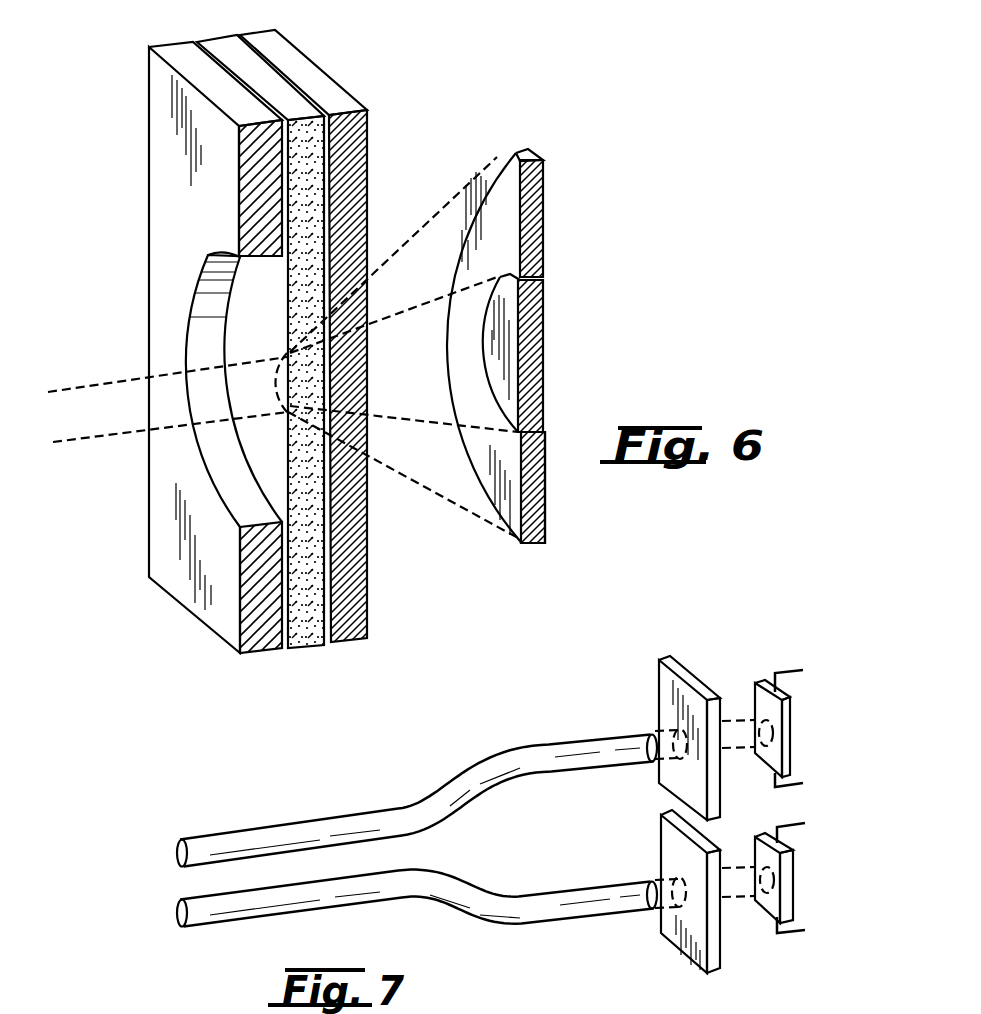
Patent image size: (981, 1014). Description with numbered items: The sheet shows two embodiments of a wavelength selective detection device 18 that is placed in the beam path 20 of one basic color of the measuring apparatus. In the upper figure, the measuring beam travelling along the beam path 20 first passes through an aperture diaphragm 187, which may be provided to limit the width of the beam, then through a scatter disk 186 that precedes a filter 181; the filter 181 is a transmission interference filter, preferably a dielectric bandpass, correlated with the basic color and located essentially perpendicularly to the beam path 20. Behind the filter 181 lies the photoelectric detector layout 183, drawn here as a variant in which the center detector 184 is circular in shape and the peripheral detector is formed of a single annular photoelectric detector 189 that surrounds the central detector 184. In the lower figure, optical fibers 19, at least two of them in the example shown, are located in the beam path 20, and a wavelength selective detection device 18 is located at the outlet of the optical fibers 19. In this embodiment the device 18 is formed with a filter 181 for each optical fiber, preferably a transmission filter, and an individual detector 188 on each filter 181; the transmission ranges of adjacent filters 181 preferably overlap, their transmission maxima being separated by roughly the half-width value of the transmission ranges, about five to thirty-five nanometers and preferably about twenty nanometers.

In FIG. 6, the wavelength selective detection device 18 is at (563, 327).
In FIG. 7, the wavelength selective detection device 18 is at (512, 788).
In FIG. 7, the optical fibers 19 is at (555, 750).
In FIG. 6, the beam path 20 is at (80, 390).
In FIG. 6, the filter 181 is at (343, 148).
In FIG. 7, the filter 181 is at (693, 673).
In FIG. 6, the photoelectric detector layout 183 is at (544, 506).
In FIG. 6, the center detector 184 is at (530, 378).
In FIG. 6, the scatter disk 186 is at (308, 193).
In FIG. 6, the aperture diaphragm 187 is at (168, 217).
In FIG. 7, the individual detector 188 is at (790, 742).
In FIG. 6, the annular photoelectric detector 189 is at (530, 219).